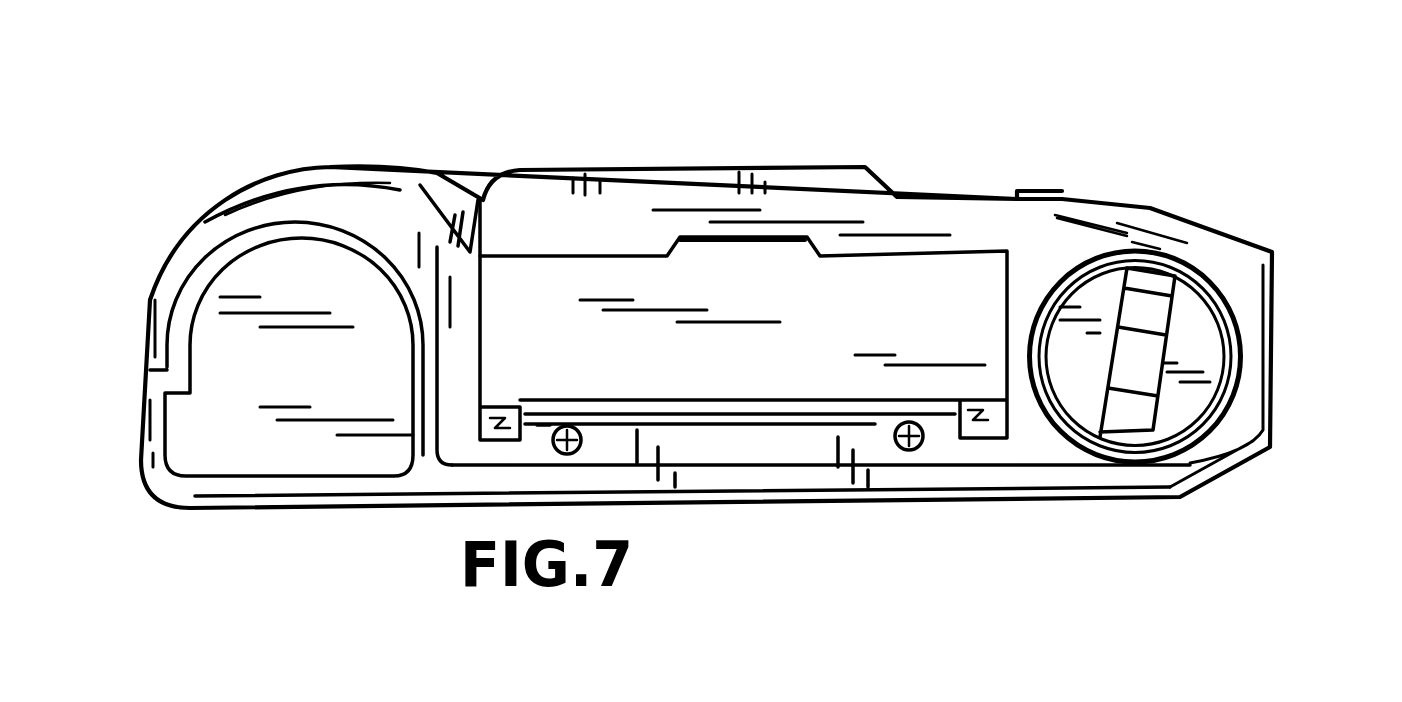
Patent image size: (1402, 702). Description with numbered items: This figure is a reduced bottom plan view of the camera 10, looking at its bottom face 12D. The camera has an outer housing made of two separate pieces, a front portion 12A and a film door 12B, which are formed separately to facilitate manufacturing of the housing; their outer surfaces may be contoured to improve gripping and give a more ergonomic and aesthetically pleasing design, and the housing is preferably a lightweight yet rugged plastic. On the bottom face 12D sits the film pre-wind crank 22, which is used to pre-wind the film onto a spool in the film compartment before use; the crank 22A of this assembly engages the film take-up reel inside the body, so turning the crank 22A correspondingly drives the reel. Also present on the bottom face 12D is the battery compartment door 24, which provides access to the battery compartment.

The camera 10 is at (158, 180).
The front portion 12A is at (372, 170).
The film door 12B is at (307, 510).
The bottom face 12D is at (742, 472).
The film pre-wind crank 22 is at (1193, 343).
The crank 22A is at (1123, 415).
The battery compartment door 24 is at (882, 275).